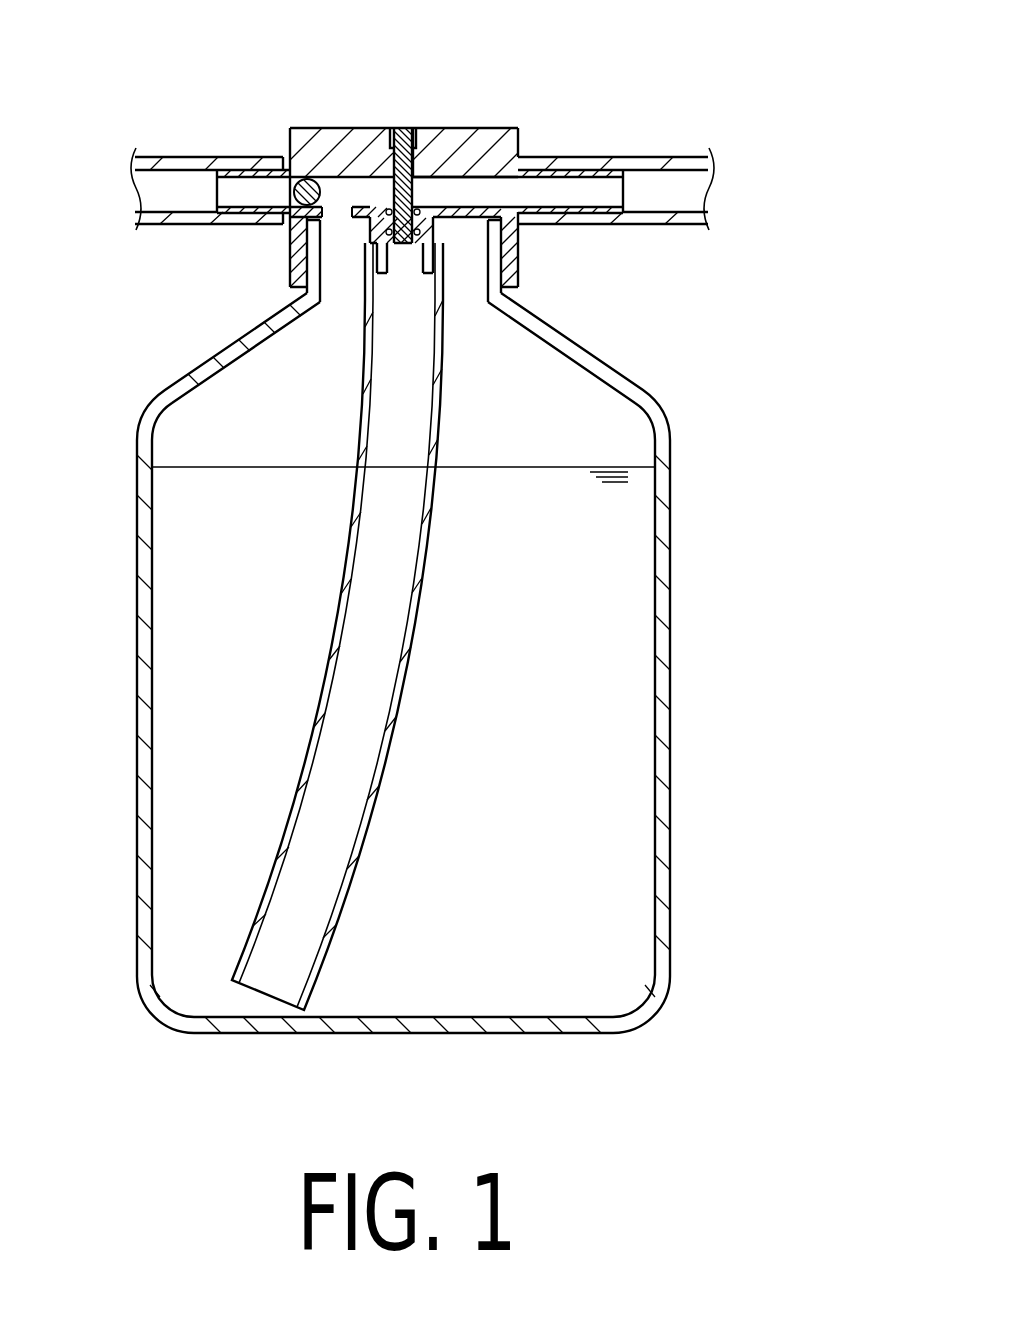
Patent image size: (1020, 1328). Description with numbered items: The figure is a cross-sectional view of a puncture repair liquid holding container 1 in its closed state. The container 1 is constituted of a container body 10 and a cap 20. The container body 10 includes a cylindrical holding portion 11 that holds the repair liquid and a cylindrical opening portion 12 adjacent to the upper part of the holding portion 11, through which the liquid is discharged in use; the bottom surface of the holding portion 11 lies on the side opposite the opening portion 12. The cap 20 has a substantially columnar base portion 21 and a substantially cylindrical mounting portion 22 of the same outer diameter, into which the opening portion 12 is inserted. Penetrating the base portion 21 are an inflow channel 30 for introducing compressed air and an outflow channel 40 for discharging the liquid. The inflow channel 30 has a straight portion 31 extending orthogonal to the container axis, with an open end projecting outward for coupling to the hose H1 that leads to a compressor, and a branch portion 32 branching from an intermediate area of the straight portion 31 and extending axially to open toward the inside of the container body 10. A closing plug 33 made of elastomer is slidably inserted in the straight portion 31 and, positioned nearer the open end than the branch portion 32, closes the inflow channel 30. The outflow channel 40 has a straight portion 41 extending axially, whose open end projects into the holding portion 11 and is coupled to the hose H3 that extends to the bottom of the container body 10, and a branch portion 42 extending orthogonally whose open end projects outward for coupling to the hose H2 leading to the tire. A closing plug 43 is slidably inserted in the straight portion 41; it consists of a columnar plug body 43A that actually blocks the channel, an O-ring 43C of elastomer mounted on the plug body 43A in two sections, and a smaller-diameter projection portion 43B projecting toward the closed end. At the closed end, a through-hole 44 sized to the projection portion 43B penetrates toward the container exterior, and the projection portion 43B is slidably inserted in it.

The puncture repair liquid holding container 1 is at (644, 86).
The container body 10 is at (676, 404).
The holding portion 11 is at (668, 532).
The opening portion 12 is at (320, 305).
The cap 20 is at (530, 124).
The base portion 21 is at (463, 132).
The mounting portion 22 is at (330, 258).
The inflow channel 30 is at (351, 187).
The straight portion 31 is at (286, 186).
The branch portion 32 is at (340, 208).
The closing plug 33 is at (307, 180).
The outflow channel 40 is at (497, 162).
The straight portion 41 is at (400, 335).
The branch portion 42 is at (546, 185).
The closing plug 43 is at (411, 127).
The plug body 43A is at (503, 253).
The projection portion 43B is at (406, 127).
The O-ring 43C is at (517, 284).
The through-hole 44 is at (398, 130).
The hose H1 is at (185, 162).
The hose H2 is at (678, 162).
The hose H3 is at (356, 452).